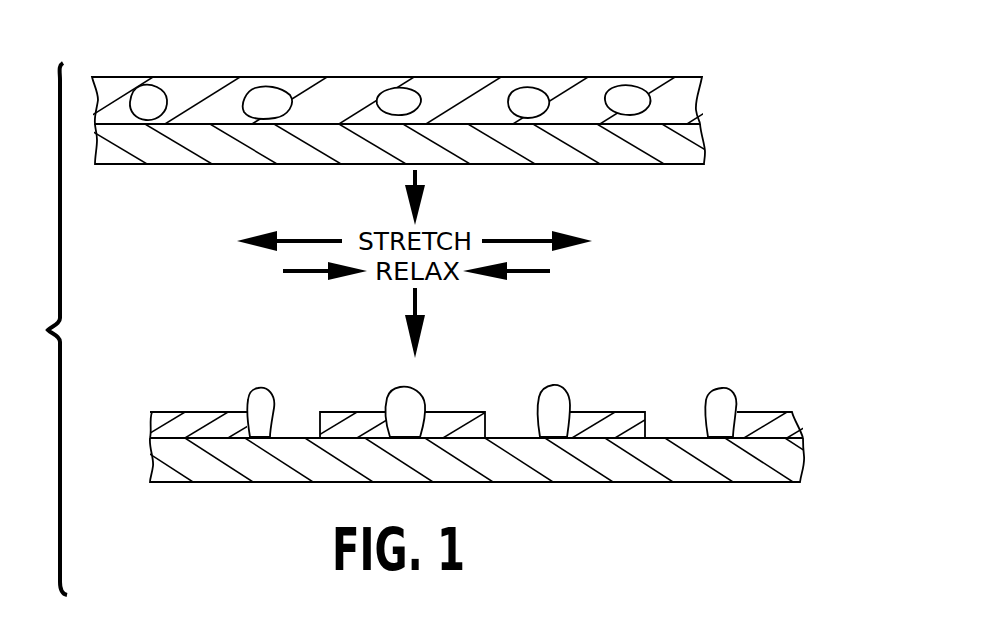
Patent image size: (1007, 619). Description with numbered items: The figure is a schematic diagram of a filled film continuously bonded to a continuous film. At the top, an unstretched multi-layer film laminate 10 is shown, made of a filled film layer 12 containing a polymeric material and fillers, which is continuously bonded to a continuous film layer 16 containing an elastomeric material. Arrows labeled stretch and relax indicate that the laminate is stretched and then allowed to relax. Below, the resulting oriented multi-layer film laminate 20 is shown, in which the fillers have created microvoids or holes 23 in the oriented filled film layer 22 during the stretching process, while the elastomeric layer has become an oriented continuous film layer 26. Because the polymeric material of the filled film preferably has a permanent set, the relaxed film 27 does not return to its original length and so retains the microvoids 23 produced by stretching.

The unstretched multi-layer film laminate 10 is at (449, 83).
The filled film layer 12 is at (687, 107).
The continuous film layer 16 is at (699, 142).
The oriented multi-layer film laminate 20 is at (490, 388).
The oriented filled film layer 22 is at (790, 423).
The microvoids or holes 23 is at (298, 433).
The oriented continuous film layer 26 is at (787, 462).
The relaxed film 27 is at (177, 436).